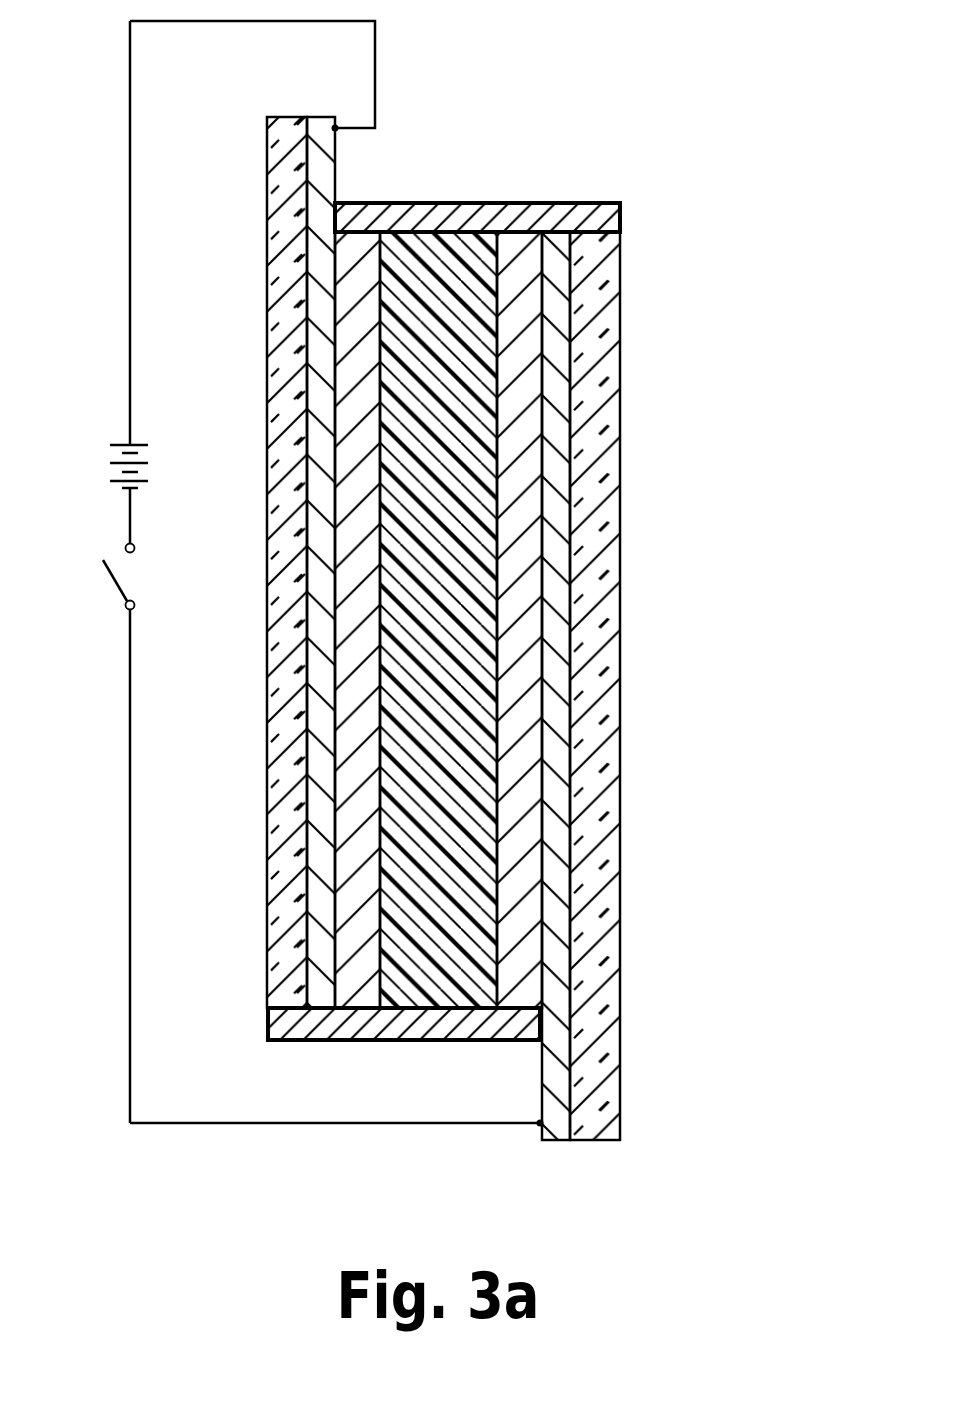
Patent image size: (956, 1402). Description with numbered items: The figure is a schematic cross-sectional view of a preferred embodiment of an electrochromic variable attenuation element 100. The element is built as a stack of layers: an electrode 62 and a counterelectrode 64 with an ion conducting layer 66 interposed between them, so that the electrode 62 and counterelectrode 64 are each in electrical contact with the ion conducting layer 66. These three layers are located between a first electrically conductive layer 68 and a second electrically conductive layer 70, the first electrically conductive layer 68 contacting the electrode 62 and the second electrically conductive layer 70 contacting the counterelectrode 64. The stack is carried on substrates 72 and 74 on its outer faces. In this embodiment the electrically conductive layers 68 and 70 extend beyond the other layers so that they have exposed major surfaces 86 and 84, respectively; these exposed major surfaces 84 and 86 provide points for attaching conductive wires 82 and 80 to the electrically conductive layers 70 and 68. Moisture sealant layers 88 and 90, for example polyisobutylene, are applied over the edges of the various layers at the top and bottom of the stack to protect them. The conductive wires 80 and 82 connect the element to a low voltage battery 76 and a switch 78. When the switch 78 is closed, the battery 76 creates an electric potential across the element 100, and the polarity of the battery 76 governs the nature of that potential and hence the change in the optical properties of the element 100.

The electrode 62 is at (355, 994).
The counterelectrode 64 is at (521, 262).
The ion conducting layer 66 is at (432, 253).
The first electrically conductive layer 68 is at (317, 125).
The second electrically conductive layer 70 is at (557, 1103).
The substrate 72 is at (594, 917).
The substrate 74 is at (289, 135).
The low voltage battery 76 is at (122, 445).
The switch 78 is at (108, 570).
The conductive wire 80 is at (130, 345).
The conductive wire 82 is at (232, 1124).
The exposed major surface 84 is at (541, 1087).
The exposed major surface 86 is at (340, 175).
The moisture sealant layer 88 is at (616, 218).
The moisture sealant layer 90 is at (268, 1028).
The electrochromic variable attenuation element 100 is at (454, 619).